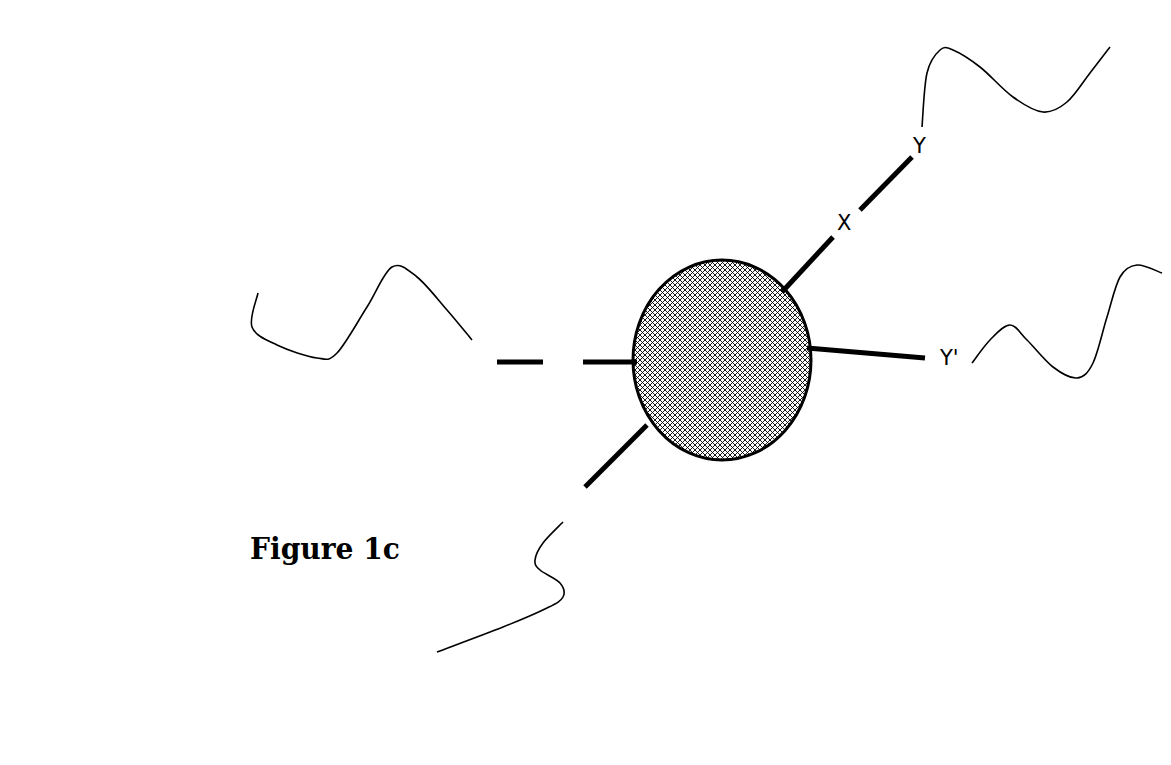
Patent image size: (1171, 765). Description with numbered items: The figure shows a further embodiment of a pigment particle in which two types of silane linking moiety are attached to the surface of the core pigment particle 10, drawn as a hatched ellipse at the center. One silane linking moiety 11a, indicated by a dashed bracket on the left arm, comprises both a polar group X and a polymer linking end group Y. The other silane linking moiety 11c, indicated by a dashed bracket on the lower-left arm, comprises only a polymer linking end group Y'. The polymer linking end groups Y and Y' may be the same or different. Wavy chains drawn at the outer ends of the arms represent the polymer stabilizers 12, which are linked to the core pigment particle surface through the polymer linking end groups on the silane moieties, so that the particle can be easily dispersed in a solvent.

The core pigment particle 10 is at (722, 360).
The silane linking moiety 11a is at (637, 333).
The silane linking moiety 11c is at (650, 438).
The polymer stabilizer 12 is at (1047, 121).